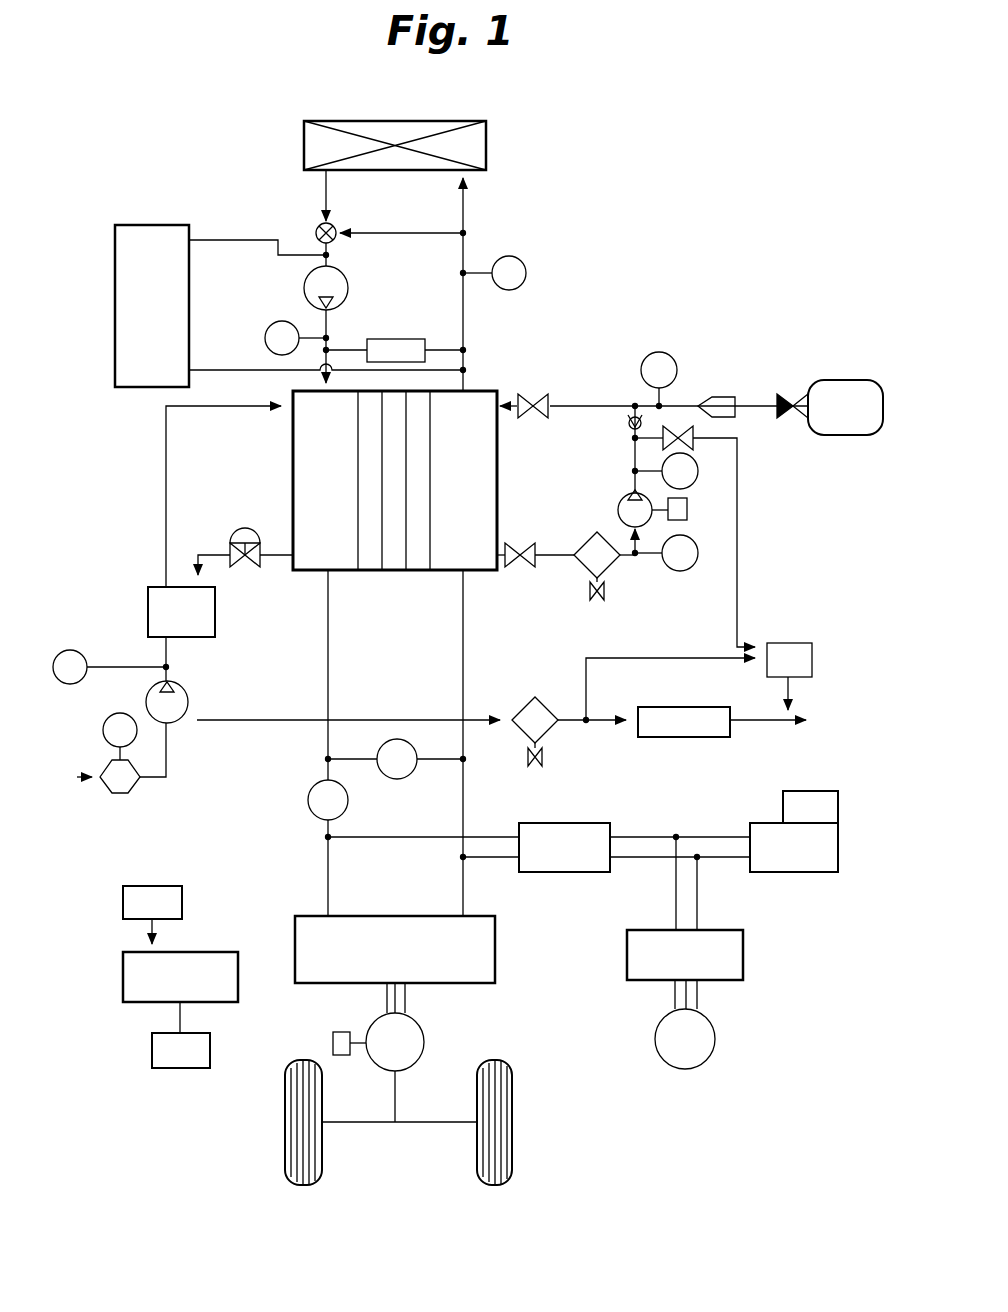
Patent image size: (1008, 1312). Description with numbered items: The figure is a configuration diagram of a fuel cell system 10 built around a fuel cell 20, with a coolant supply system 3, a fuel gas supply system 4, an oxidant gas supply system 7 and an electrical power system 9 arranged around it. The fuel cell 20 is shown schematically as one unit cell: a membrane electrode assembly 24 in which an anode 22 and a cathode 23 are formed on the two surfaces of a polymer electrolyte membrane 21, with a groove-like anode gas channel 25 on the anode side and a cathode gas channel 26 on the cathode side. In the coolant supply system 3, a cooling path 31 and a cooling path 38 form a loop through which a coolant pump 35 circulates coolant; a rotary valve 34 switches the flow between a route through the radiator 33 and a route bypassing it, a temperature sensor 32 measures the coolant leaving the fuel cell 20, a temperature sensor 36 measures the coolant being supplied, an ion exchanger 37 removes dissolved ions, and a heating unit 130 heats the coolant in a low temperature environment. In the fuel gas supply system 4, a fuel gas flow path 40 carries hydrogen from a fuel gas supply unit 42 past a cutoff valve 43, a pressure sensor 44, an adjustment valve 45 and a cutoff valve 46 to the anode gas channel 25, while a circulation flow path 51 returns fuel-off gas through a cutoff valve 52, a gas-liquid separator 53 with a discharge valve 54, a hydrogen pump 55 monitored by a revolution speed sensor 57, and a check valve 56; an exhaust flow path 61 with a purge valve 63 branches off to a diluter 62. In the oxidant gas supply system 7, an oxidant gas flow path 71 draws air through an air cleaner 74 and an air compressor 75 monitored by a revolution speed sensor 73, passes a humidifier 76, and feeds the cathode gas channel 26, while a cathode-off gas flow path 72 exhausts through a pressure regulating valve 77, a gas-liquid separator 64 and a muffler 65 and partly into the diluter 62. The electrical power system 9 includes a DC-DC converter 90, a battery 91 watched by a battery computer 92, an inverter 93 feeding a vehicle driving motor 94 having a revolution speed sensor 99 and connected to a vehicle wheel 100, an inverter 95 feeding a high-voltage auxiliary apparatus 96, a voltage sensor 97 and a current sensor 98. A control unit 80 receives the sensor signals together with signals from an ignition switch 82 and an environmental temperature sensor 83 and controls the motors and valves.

The fuel cell system 10 is at (706, 192).
The coolant supply system 3 is at (404, 295).
The fuel gas supply system 4 is at (534, 462).
The oxidant gas supply system 7 is at (204, 452).
The electrical power system 9 is at (404, 892).
The fuel cell 20 is at (290, 458).
The polymer electrolyte membrane 21 is at (396, 570).
The anode 22 is at (418, 570).
The cathode 23 is at (370, 570).
The membrane electrode assembly 24 is at (448, 622).
The anode gas channel 25 is at (478, 572).
The cathode gas channel 26 is at (313, 572).
The cooling path 31 is at (464, 322).
The temperature sensor 32 is at (512, 256).
The radiator 33 is at (488, 152).
The rotary valve 34 is at (316, 230).
The coolant pump 35 is at (304, 282).
The temperature sensor 36 is at (266, 326).
The ion exchanger 37 is at (402, 340).
The cooling path 38 is at (326, 332).
The fuel gas flow path 40 is at (600, 406).
The fuel gas supply unit 42 is at (841, 383).
The cutoff valve 43 is at (783, 394).
The pressure sensor 44 is at (645, 360).
The adjustment valve 45 is at (708, 398).
The cutoff valve 46 is at (527, 403).
The circulation flow path 51 is at (554, 558).
The cutoff valve 52 is at (522, 549).
The gas-liquid separator 53 is at (588, 540).
The discharge valve 54 is at (596, 600).
The hydrogen pump 55 is at (628, 496).
The check valve 56 is at (624, 428).
The revolution speed sensor 57 is at (687, 508).
The exhaust flow path 61 is at (744, 504).
The diluter 62 is at (788, 641).
The purge valve 63 is at (693, 436).
The gas-liquid separator 64 is at (550, 740).
The muffler 65 is at (678, 738).
The oxidant gas flow path 71 is at (164, 475).
The cathode-off gas flow path 72 is at (268, 544).
The revolution speed sensor 73 is at (72, 648).
The air cleaner 74 is at (122, 794).
The air compressor 75 is at (176, 724).
The humidifier 76 is at (215, 620).
The pressure regulating valve 77 is at (243, 528).
The control unit 80 is at (201, 952).
The ignition switch 82 is at (182, 892).
The temperature sensor 83 is at (172, 1068).
The DC-DC converter 90 is at (540, 823).
The battery 91 is at (752, 823).
The battery computer 92 is at (818, 791).
The inverter 93 is at (502, 948).
The vehicle driving motor 94 is at (427, 1040).
The inverter 95 is at (747, 951).
The high-voltage auxiliary apparatus 96 is at (717, 1038).
The voltage sensor 97 is at (404, 778).
The current sensor 98 is at (348, 800).
The revolution speed sensor 99 is at (332, 1050).
The vehicle wheel 100 is at (512, 1086).
The heating unit 130 is at (148, 220).